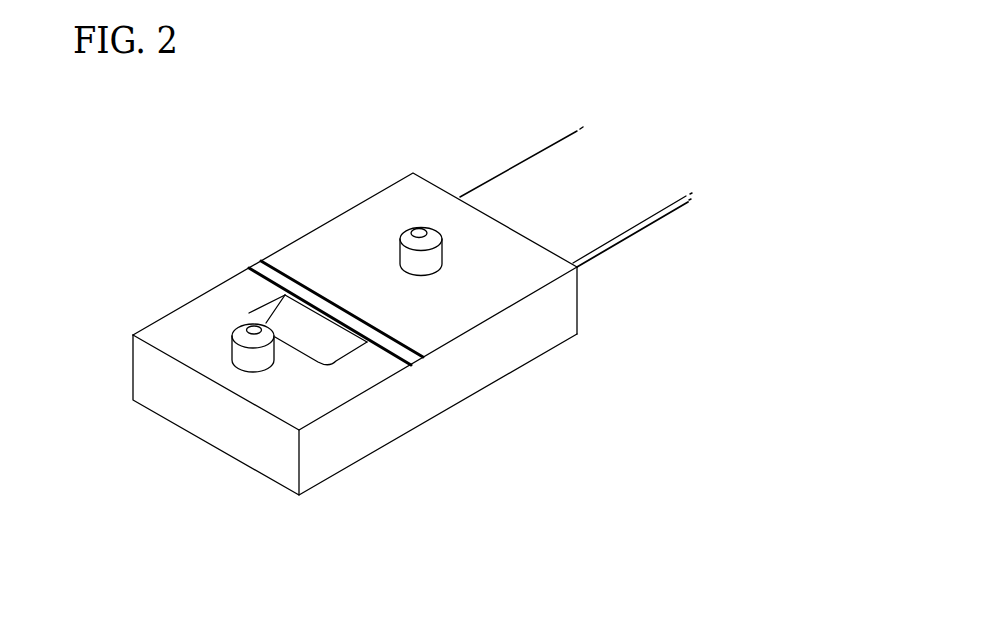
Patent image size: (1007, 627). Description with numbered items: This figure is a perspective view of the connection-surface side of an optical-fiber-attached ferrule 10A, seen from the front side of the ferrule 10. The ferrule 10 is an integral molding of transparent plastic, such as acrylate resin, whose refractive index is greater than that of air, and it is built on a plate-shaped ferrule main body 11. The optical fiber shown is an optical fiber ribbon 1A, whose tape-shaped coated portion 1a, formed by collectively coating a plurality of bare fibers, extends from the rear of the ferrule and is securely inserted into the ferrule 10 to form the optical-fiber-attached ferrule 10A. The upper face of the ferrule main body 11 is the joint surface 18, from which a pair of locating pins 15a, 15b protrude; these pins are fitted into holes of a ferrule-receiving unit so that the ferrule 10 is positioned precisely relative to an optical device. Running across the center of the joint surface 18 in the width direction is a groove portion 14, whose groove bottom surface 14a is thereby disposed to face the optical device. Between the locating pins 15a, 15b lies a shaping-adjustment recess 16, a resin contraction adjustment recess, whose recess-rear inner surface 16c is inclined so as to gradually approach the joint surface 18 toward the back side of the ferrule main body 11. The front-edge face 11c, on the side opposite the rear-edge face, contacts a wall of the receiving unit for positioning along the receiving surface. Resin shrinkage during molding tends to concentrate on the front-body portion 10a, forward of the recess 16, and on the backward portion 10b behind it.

The optical-fiber-attached ferrule 10A is at (291, 176).
The ferrule 10 is at (394, 172).
The front-body portion 10a is at (337, 462).
The backward portion 10b is at (555, 335).
The ferrule main body 11 is at (438, 188).
The front-edge face 11c is at (278, 455).
The groove portion 14 is at (420, 358).
The groove bottom surface 14a is at (258, 264).
The locating pin 15a is at (248, 330).
The locating pin 15b is at (406, 237).
The shaping-adjustment recess 16 is at (323, 353).
The recess-rear inner surface 16c is at (307, 338).
The joint surface 18 is at (440, 313).
The optical fiber ribbon 1A is at (634, 243).
The coated portion 1a is at (663, 213).